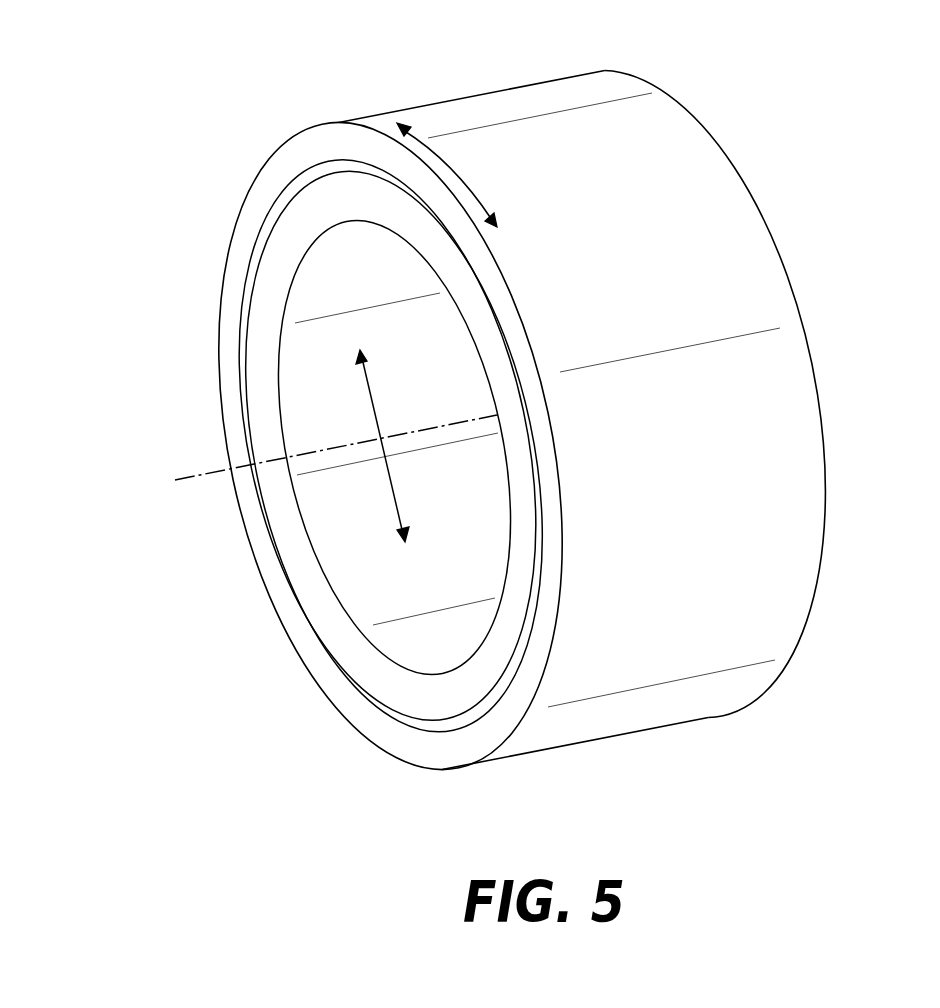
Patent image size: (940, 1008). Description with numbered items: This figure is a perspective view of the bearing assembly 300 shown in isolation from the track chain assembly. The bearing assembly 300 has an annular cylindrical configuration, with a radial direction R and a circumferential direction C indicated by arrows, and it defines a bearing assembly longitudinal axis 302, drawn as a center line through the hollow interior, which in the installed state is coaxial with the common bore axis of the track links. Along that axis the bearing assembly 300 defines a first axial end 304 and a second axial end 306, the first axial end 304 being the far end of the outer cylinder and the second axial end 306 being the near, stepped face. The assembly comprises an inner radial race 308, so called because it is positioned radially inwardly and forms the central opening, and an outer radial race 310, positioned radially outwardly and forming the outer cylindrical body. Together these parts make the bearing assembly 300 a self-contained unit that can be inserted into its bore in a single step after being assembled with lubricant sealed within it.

The bearing assembly 300 is at (705, 53).
The bearing assembly longitudinal axis 302 is at (190, 478).
The first axial end 304 is at (822, 573).
The second axial end 306 is at (500, 690).
The inner radial race 308 is at (360, 653).
The outer radial race 310 is at (740, 657).
The radial direction R is at (370, 397).
The circumferential direction C is at (452, 168).